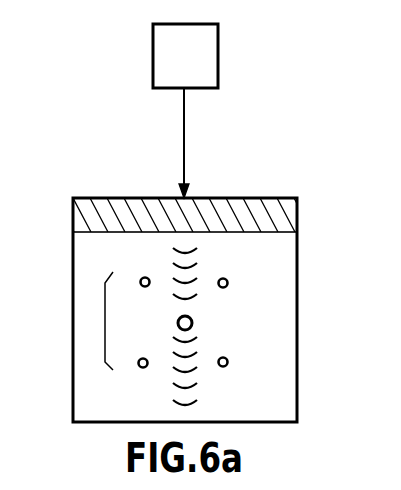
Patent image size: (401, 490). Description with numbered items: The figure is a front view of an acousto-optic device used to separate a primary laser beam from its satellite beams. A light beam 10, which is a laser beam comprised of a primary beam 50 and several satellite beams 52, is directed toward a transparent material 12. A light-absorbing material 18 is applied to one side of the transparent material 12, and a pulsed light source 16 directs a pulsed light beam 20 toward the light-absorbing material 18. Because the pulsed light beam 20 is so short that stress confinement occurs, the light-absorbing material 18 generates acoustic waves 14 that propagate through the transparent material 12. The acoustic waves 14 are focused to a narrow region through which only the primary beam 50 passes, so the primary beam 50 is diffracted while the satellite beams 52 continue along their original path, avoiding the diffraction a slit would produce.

The light beam 10 is at (105, 322).
The transparent material 12 is at (298, 308).
The acoustic waves 14 is at (180, 298).
The pulsed light source 16 is at (200, 67).
The light-absorbing material 18 is at (298, 210).
The pulsed light beam 20 is at (184, 130).
The primary beam 50 is at (193, 323).
The satellite beams 52 is at (141, 280).